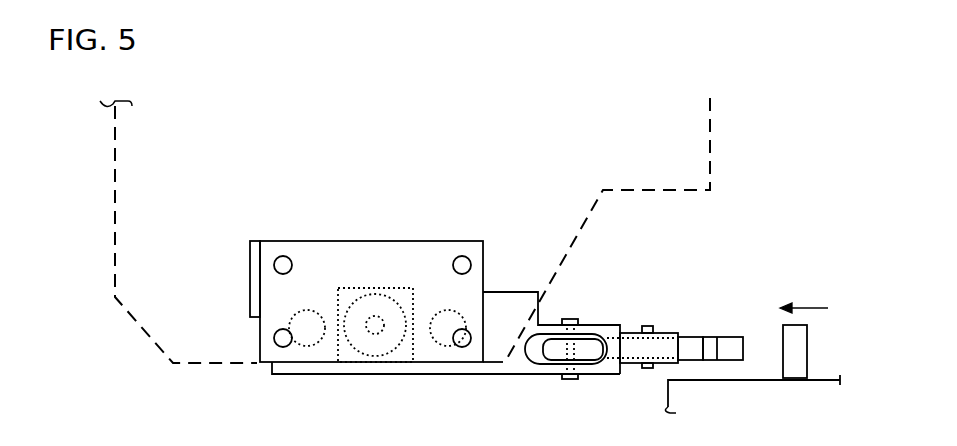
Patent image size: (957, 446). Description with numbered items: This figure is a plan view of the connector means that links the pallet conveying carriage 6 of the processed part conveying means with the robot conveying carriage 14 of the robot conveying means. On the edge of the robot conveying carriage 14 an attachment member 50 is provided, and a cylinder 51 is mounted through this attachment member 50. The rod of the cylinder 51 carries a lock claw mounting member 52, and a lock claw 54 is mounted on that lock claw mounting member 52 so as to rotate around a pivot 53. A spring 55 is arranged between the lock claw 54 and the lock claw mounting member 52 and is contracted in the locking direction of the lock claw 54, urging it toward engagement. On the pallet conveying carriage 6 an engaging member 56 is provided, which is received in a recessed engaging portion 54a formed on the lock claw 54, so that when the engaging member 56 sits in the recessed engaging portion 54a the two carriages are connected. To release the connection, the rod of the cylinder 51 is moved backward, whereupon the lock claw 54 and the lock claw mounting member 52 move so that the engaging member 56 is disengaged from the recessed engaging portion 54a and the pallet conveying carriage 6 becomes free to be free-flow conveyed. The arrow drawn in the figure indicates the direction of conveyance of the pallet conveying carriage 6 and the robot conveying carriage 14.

The robot conveying carriage 14 is at (710, 132).
The attachment member 50 is at (325, 241).
The cylinder 51 is at (413, 350).
The lock claw mounting member 52 is at (507, 292).
The pivot 53 is at (572, 319).
The lock claw 54 is at (725, 337).
The recessed engaging portion 54a is at (688, 346).
The spring 55 is at (650, 326).
The engaging member 56 is at (807, 340).
The pallet conveying carriage 6 is at (822, 380).